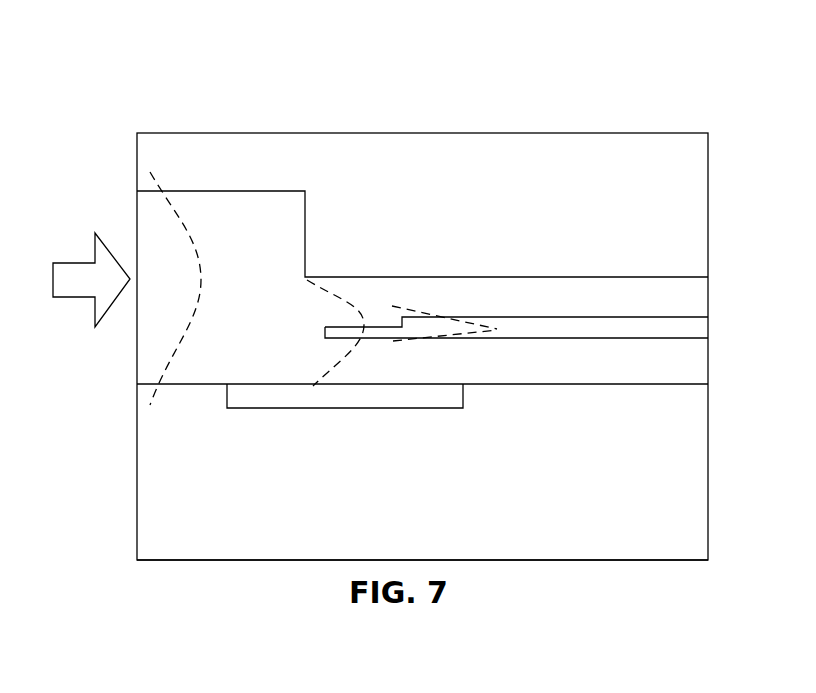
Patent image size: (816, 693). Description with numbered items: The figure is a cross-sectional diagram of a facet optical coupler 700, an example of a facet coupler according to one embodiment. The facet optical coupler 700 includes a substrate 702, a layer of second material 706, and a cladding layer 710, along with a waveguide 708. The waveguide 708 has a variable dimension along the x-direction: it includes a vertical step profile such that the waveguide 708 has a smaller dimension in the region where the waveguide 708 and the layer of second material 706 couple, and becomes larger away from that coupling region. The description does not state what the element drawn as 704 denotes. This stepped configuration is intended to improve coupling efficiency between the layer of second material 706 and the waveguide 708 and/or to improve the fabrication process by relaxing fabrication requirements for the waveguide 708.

The facet optical coupler 700 is at (684, 116).
The substrate 702 is at (692, 481).
The buried layer 704 is at (447, 405).
The layer of second material 706 is at (689, 370).
The waveguide 708 is at (698, 331).
The cladding layer 710 is at (692, 235).